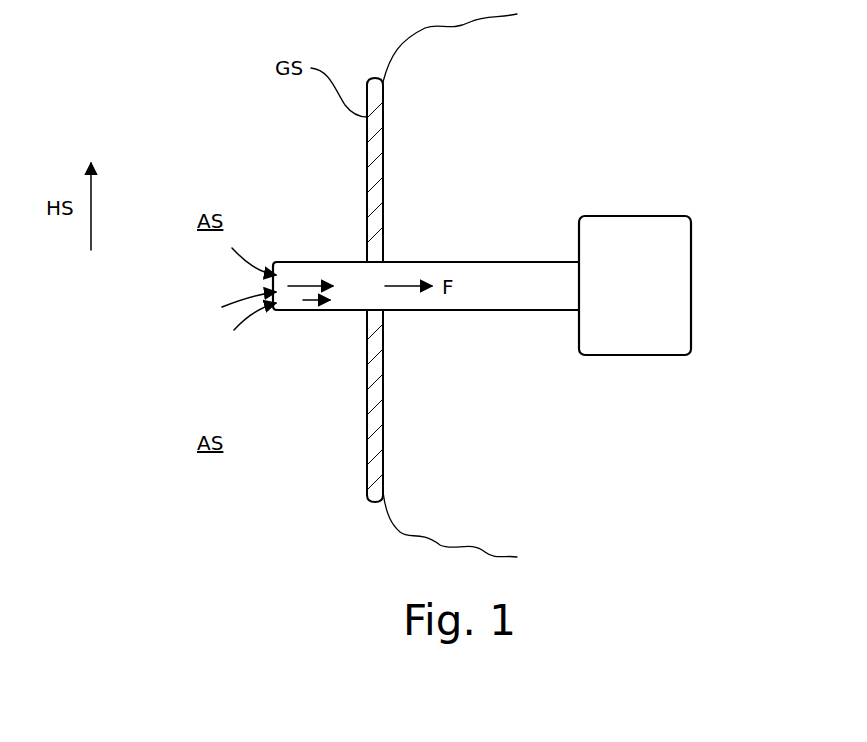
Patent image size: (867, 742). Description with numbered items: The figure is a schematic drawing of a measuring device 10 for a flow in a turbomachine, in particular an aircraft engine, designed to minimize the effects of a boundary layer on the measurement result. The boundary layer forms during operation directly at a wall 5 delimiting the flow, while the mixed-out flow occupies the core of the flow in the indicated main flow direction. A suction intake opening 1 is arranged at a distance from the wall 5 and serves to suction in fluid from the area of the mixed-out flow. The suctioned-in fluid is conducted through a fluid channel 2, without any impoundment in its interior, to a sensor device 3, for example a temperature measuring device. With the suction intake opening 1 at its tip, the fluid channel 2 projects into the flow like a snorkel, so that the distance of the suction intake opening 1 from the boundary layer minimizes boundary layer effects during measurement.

The suction intake opening 1 is at (288, 262).
The fluid channel 2 is at (472, 311).
The sensor device 3 is at (691, 283).
The wall 5 is at (383, 175).
The measuring device 10 is at (698, 158).